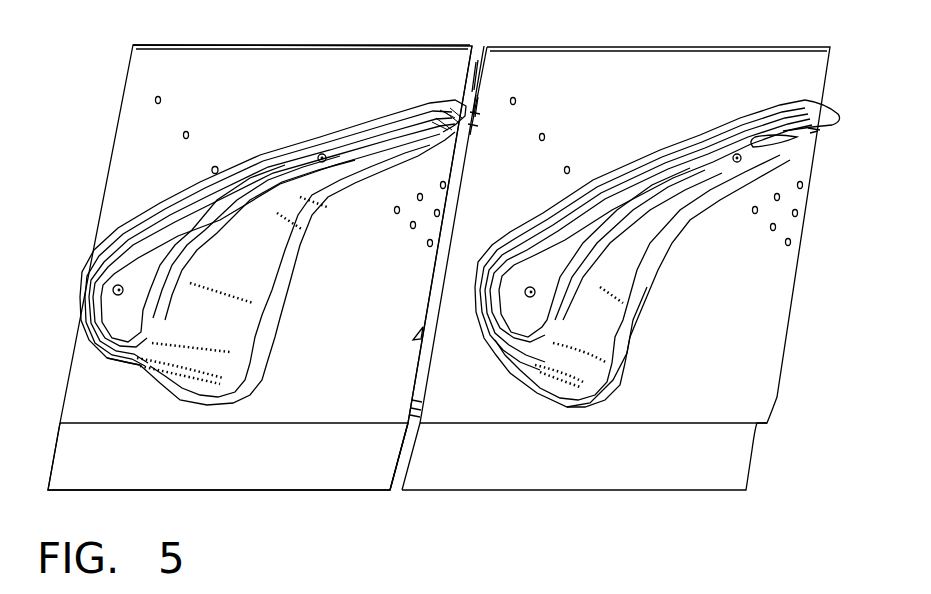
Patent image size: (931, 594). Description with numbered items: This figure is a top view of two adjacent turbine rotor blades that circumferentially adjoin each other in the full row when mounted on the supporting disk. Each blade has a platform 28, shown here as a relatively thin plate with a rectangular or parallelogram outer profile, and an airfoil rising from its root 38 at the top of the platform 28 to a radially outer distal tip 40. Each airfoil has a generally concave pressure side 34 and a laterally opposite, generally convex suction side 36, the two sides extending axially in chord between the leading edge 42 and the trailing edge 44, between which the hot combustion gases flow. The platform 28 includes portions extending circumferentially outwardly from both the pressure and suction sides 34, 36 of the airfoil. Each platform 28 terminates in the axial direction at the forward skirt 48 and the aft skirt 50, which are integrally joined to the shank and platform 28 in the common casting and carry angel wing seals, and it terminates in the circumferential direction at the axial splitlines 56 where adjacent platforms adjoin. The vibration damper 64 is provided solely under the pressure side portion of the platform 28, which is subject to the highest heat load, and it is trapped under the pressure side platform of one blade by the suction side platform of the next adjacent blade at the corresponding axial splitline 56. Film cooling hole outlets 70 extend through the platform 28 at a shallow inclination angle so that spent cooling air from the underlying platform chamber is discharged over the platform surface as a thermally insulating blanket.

The platform 28 is at (285, 95).
The pressure side 34 is at (633, 268).
The suction side 36 is at (660, 158).
The root 38 is at (287, 260).
The tip 40 is at (79, 295).
The leading edge 42 is at (552, 378).
The trailing edge 44 is at (828, 113).
The forward skirt 48 is at (53, 437).
The aft skirt 50 is at (133, 47).
The axial splitline 56 is at (478, 48).
The vibration damper 64 is at (413, 337).
The film cooling hole outlets 70 is at (155, 100).